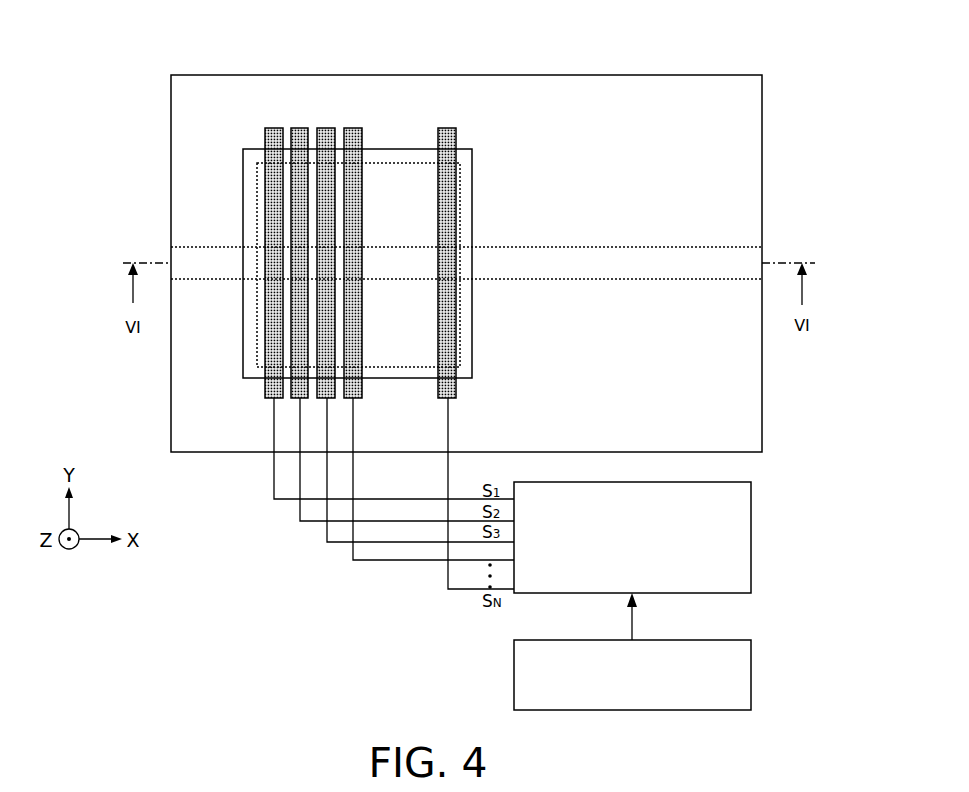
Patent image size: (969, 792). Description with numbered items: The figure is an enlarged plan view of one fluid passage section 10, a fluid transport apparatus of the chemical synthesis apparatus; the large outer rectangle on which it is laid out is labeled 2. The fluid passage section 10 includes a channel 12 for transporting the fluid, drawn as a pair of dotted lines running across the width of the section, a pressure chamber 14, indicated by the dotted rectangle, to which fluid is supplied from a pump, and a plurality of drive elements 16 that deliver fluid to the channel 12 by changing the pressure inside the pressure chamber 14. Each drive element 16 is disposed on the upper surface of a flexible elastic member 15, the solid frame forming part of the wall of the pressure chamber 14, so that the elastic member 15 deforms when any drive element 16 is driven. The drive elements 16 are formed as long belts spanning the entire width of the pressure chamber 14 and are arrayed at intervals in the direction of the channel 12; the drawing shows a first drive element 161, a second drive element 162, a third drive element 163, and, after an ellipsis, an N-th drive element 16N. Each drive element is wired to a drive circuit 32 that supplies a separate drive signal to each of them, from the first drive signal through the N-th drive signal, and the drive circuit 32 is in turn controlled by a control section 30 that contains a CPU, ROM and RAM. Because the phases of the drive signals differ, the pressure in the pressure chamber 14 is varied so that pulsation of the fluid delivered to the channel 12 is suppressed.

The fluid passage section 10 is at (524, 70).
The substrate / base member 2 is at (762, 127).
The channel 12 is at (585, 280).
The pressure chamber 14 is at (460, 207).
The elastic member 15 is at (472, 160).
The drive element 16 is at (467, 48).
The first drive element 161 is at (272, 127).
The second drive element 162 is at (299, 127).
The third element 163 is at (326, 127).
The N-th drive element 16N is at (446, 127).
The drive circuit 32 is at (751, 540).
The control section 30 is at (751, 672).